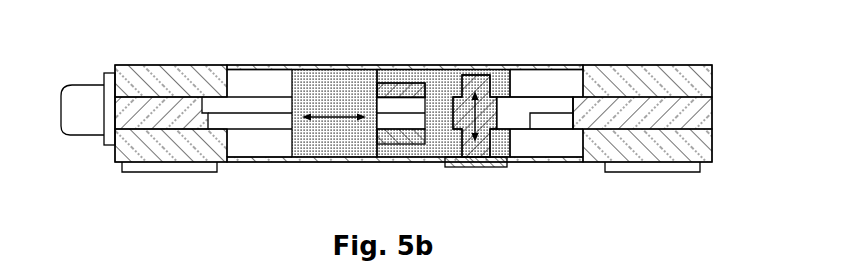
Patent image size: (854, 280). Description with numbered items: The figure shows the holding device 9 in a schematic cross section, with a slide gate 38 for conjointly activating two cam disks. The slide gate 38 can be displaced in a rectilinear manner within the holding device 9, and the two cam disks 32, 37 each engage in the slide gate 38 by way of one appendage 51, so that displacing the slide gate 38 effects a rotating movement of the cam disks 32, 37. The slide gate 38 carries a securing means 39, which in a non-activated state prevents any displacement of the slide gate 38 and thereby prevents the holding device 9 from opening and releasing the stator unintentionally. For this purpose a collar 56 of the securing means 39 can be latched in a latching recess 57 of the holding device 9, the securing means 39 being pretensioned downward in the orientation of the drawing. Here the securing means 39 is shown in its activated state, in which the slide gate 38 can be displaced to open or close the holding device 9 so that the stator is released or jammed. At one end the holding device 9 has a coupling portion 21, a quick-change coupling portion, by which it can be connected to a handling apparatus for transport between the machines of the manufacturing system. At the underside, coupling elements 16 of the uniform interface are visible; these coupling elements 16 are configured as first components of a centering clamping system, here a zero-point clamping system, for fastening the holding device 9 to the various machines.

The holding device 9 is at (114, 41).
The coupling portion 21 is at (85, 125).
The slide gate 38 is at (333, 88).
The cam disk 37 is at (403, 90).
The appendage 51 is at (410, 107).
The cam disk 32 is at (398, 138).
The securing means 39 is at (482, 89).
The latching recess 57 is at (557, 123).
The collar 56 is at (497, 98).
The coupling element 16 is at (622, 167).